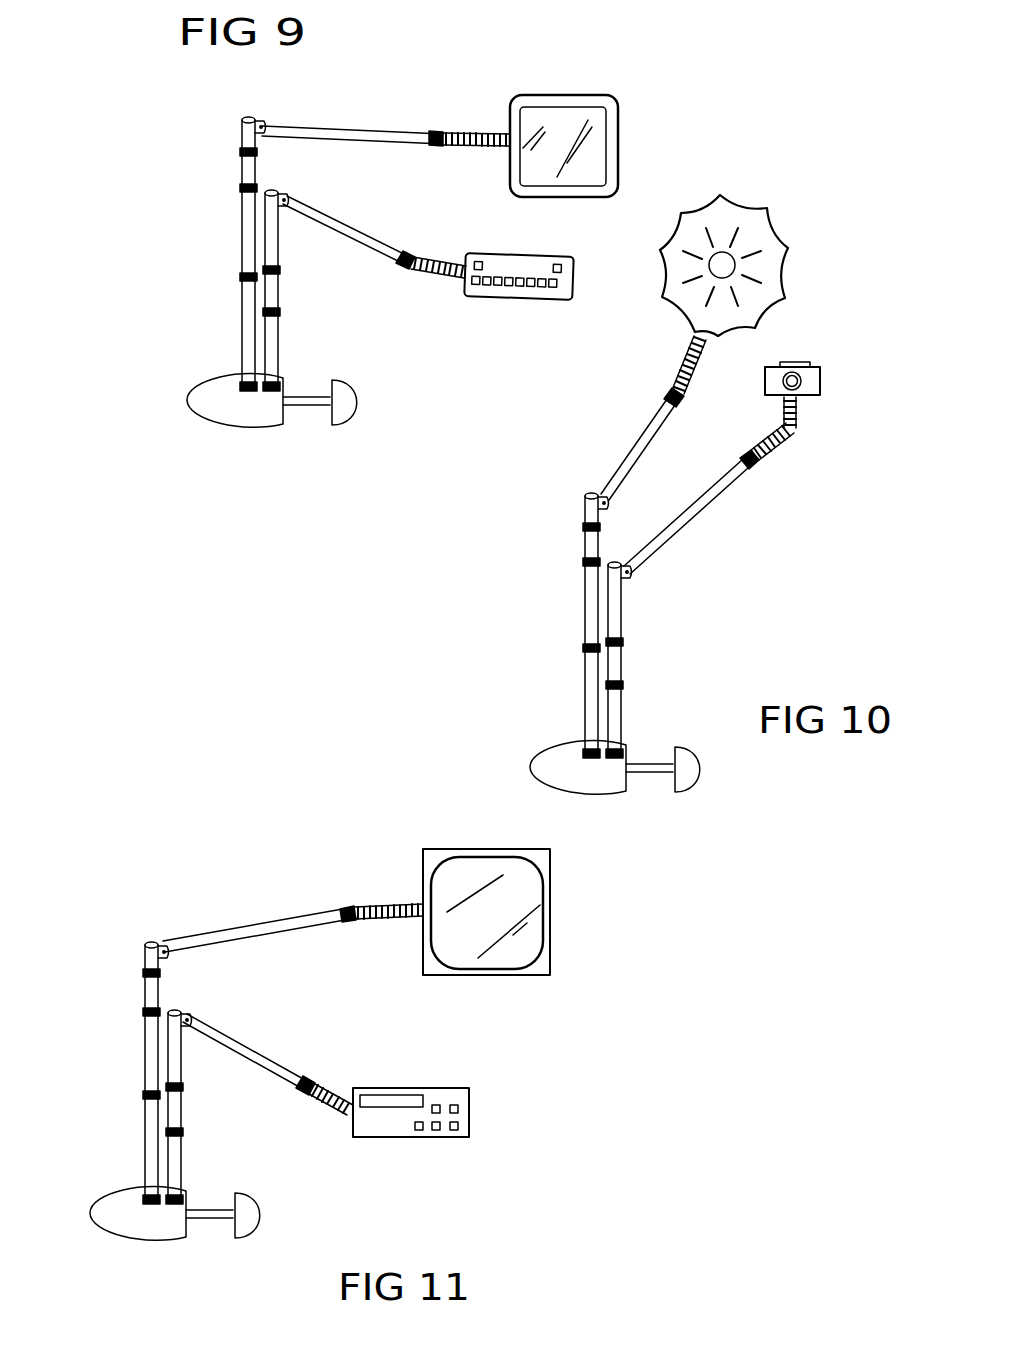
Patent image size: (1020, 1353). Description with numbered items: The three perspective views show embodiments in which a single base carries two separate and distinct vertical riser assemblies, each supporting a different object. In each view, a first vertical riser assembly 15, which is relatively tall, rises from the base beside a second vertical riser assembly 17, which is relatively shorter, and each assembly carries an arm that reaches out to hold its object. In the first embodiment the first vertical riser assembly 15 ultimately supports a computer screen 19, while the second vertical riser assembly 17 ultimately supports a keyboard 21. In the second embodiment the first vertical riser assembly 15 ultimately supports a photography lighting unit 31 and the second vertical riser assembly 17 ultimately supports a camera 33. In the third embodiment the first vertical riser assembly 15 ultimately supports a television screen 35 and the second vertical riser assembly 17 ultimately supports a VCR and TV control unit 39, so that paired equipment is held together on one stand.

In FIG. 9, the first vertical riser assembly 15 is at (240, 249).
In FIG. 10, the first vertical riser assembly 15 is at (581, 597).
In FIG. 11, the first vertical riser assembly 15 is at (143, 990).
In FIG. 9, the second vertical riser assembly 17 is at (284, 322).
In FIG. 10, the second vertical riser assembly 17 is at (624, 664).
In FIG. 11, the second vertical riser assembly 17 is at (184, 1150).
In FIG. 9, the computer screen 19 is at (598, 93).
In FIG. 9, the keyboard 21 is at (487, 265).
In FIG. 10, the photography lighting unit 31 is at (762, 243).
In FIG. 10, the camera 33 is at (810, 378).
In FIG. 11, the television screen 35 is at (525, 940).
In FIG. 11, the VCR and TV control unit 39 is at (460, 1100).